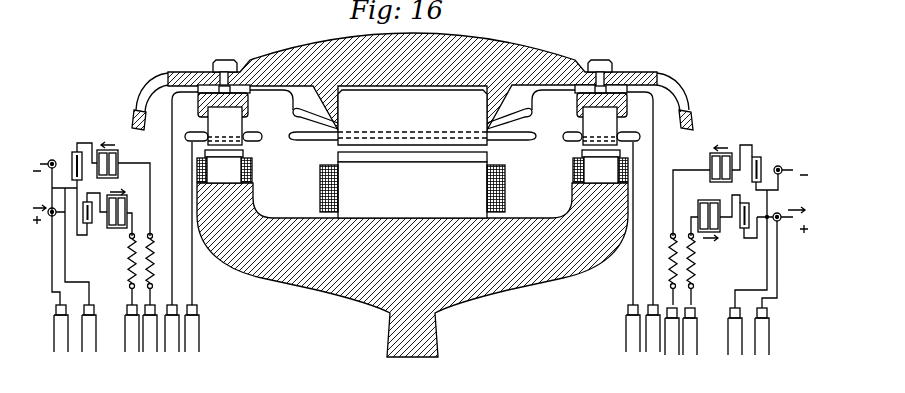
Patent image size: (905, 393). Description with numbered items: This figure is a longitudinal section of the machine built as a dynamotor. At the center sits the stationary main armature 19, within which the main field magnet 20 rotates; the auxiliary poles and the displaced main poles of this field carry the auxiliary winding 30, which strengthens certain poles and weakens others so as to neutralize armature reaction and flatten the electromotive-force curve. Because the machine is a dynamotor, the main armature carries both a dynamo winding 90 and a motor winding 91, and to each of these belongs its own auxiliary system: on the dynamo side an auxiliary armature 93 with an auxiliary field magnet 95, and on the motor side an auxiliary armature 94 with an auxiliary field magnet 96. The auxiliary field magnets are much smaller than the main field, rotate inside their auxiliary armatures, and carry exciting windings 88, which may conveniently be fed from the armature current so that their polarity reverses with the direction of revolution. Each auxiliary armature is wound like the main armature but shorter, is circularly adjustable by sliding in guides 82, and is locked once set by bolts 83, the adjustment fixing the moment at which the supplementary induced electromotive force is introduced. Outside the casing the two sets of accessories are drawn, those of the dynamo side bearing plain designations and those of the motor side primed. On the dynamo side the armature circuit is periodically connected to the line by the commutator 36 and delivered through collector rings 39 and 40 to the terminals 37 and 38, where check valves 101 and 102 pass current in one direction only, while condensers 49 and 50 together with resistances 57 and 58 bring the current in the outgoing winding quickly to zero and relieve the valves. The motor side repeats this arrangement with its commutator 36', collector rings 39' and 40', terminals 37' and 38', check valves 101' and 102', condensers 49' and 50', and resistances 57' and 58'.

The main armature 19 is at (412, 117).
The field magnet 20 is at (412, 185).
The auxiliary winding 30 is at (322, 187).
The exciting windings 88 is at (576, 176).
The dynamo winding 90 is at (515, 141).
The motor winding 91 is at (300, 120).
The auxiliary armature 93 is at (601, 126).
The auxiliary armature 94 is at (223, 126).
The auxiliary field magnet 95 is at (600, 166).
The auxiliary field magnet 96 is at (224, 166).
The guides 82 is at (624, 110).
The bolts 83 is at (609, 72).
The terminal 37' is at (55, 222).
The terminal 38' is at (61, 246).
The condenser 49' is at (81, 155).
The check valve 101' is at (123, 180).
The condenser 50' is at (92, 221).
The check valve 102' is at (116, 227).
The resistance 57' is at (184, 270).
The resistance 58' is at (118, 270).
The commutator 36' is at (182, 340).
The collector ring 39' is at (91, 340).
The collector ring 40' is at (58, 340).
The terminal 37 is at (791, 159).
The terminal 38 is at (771, 249).
The condenser 49 is at (765, 159).
The check valve 101 is at (712, 182).
The condenser 50 is at (739, 228).
The check valve 102 is at (710, 210).
The resistance 57 is at (656, 270).
The resistance 58 is at (705, 270).
The commutator 36 is at (643, 340).
The collector ring 39 is at (732, 341).
The collector ring 40 is at (763, 341).